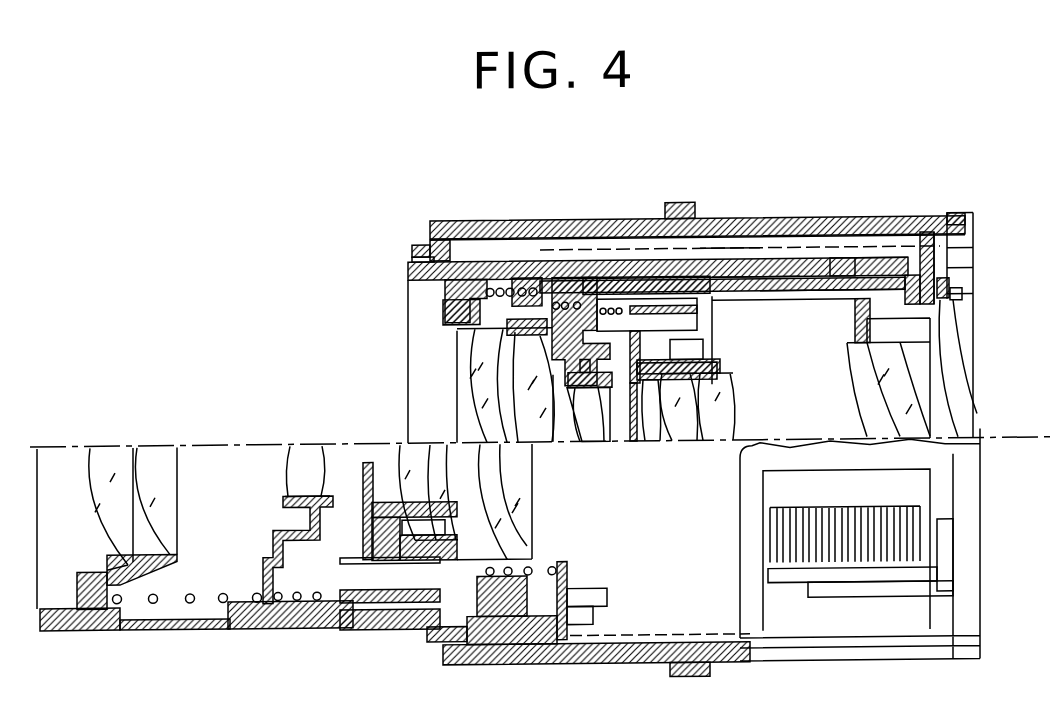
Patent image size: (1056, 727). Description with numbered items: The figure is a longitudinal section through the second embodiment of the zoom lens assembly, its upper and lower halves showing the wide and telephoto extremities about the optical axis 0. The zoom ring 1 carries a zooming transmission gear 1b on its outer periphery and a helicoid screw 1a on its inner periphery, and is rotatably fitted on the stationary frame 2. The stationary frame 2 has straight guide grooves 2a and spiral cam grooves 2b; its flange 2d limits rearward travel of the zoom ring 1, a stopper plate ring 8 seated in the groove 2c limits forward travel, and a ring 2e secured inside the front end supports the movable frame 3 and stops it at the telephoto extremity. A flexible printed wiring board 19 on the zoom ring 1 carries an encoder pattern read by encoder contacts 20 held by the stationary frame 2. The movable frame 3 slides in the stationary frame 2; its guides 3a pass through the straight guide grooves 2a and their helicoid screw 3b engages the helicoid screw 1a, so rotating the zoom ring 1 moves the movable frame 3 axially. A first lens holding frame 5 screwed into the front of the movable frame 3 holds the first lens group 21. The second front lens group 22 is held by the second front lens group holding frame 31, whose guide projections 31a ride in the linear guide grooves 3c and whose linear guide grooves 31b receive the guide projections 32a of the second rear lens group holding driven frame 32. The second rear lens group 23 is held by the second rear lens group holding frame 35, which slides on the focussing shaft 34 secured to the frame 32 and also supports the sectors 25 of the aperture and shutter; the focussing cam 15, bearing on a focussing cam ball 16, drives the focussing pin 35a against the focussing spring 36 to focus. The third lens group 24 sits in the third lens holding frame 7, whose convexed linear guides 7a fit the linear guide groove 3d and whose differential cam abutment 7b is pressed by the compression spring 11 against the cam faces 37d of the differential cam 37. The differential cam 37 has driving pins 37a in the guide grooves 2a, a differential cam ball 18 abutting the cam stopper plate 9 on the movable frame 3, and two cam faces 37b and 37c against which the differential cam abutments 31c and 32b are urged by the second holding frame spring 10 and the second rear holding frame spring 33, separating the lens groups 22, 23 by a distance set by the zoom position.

The optical axis 0 is at (220, 444).
The zoom ring 1 is at (463, 223).
The helicoid screw 1a is at (503, 241).
The zooming transmission gear 1b is at (683, 206).
The stationary frame 2 is at (974, 226).
The straight guide grooves 2a is at (974, 254).
The spiral cam grooves 2b is at (974, 272).
The groove 2c is at (420, 246).
The flange 2d is at (958, 219).
The ring 2e is at (415, 260).
The movable frame 3 is at (408, 276).
The guides 3a is at (924, 240).
The helicoid screw 3b is at (930, 238).
The linear guide grooves 3c is at (870, 263).
The linear guide groove 3d is at (825, 305).
The first lens holding frame 5 is at (445, 314).
The third lens holding frame 7 is at (852, 368).
The convexed linear guides 7a is at (858, 320).
The differential cam abutment 7b is at (848, 350).
The stopper plate ring 8 is at (436, 241).
The cam stopper plate 9 is at (942, 330).
The second holding frame spring 10 is at (485, 318).
The compression spring 11 is at (974, 425).
The focussing cam 15 is at (717, 372).
The focussing cam ball 16 is at (640, 375).
The differential cam ball 18 is at (968, 394).
The flexible printed wiring board 19 is at (840, 263).
The encoder contacts 20 is at (790, 580).
The first lens group 21 is at (150, 446).
The second front lens group 22 is at (585, 444).
The second rear lens group 23 is at (725, 444).
The third lens group 24 is at (875, 426).
The sectors 25 is at (631, 444).
The second front lens group holding frame 31 is at (492, 282).
The guide projections 31a is at (530, 280).
The linear guide grooves 31b is at (580, 283).
The differential cam abutments 31c is at (770, 283).
The second rear lens group holding driven frame 32 is at (702, 352).
The guide projections 32a is at (610, 280).
The differential cam abutments 32b is at (790, 295).
The second rear holding frame spring 33 is at (540, 330).
The focussing shaft 34 is at (698, 312).
The second rear lens group holding frame 35 is at (650, 444).
The focussing pin 35a is at (668, 444).
The focussing spring 36 is at (583, 332).
The differential cam 37 is at (962, 300).
The driving pins 37a is at (962, 288).
The cam face 37b is at (727, 283).
The cam face 37c is at (712, 252).
The cam faces 37d is at (958, 312).